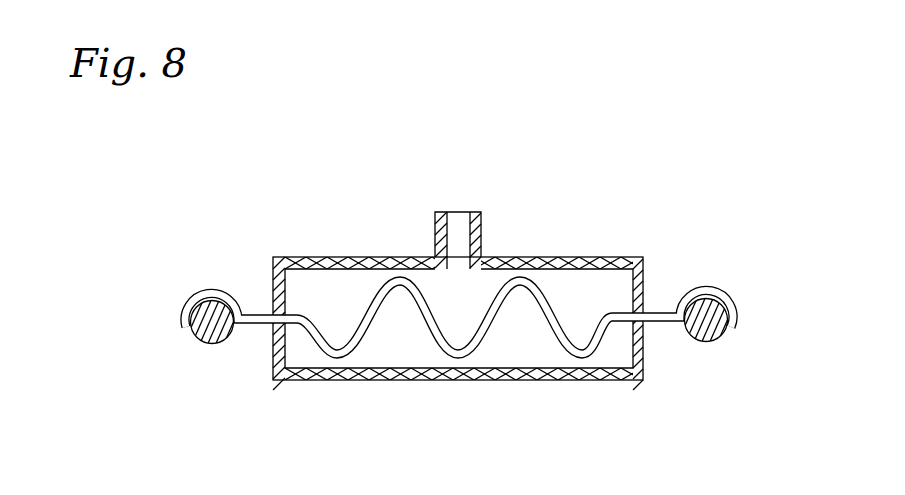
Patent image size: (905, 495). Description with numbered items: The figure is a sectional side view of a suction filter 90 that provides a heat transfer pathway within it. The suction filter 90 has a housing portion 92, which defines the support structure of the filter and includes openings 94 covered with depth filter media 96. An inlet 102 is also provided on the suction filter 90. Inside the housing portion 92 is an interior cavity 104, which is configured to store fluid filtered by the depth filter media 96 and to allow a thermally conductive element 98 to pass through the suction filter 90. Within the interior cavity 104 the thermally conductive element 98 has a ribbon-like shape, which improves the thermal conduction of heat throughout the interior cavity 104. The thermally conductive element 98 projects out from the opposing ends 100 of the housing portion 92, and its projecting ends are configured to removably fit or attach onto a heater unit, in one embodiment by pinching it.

The suction filter 90 is at (460, 264).
The housing portion 92 is at (622, 379).
The openings 94 is at (303, 258).
The depth filter media 96 is at (557, 262).
The thermally conductive element 98 is at (663, 313).
The opposing ends 100 is at (272, 352).
The inlet 102 is at (466, 212).
The interior cavity 104 is at (345, 285).